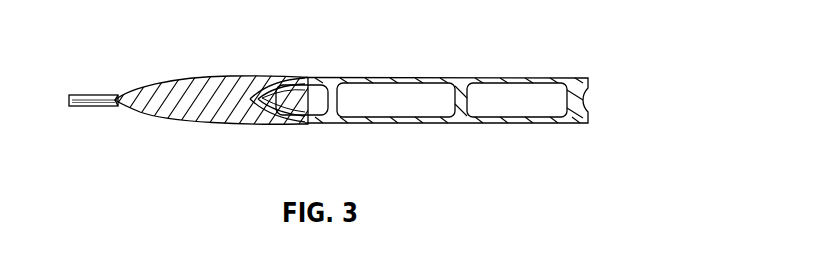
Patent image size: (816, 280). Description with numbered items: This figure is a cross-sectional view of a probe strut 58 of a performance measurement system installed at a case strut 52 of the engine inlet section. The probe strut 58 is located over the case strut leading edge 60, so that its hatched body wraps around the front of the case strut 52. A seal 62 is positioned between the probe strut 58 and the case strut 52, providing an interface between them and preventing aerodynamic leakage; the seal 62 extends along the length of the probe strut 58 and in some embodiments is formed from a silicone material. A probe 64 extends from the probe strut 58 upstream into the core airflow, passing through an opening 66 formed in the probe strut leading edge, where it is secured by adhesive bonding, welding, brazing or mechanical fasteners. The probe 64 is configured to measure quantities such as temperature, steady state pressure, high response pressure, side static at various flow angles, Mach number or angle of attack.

The case strut 52 is at (412, 76).
The probe strut 58 is at (182, 92).
The case strut leading edge 60 is at (238, 126).
The seal 62 is at (293, 76).
The probe 64 is at (82, 95).
The opening 66 is at (119, 107).